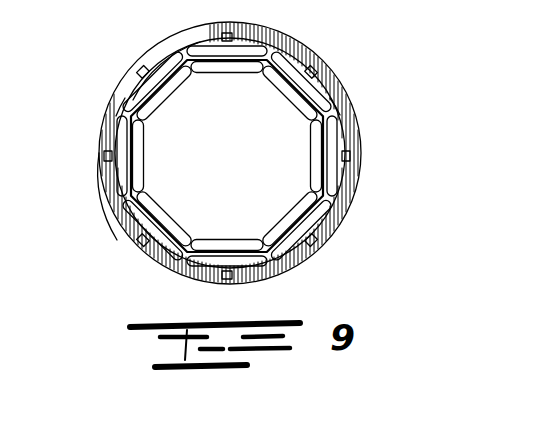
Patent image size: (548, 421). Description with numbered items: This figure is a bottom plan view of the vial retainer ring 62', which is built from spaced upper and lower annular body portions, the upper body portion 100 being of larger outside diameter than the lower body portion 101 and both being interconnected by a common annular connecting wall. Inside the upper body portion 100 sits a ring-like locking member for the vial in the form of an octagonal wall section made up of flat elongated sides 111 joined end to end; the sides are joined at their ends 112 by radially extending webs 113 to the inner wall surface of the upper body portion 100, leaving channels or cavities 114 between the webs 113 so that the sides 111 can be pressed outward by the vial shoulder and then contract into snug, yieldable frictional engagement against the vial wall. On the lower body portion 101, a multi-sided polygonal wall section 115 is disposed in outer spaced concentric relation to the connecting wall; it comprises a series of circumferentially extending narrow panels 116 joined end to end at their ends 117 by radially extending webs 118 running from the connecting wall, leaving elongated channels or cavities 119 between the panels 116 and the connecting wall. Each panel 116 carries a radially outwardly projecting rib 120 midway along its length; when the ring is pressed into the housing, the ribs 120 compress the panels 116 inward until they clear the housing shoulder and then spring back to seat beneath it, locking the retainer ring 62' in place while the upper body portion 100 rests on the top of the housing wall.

The vial retainer ring 62' is at (87, 196).
The upper annular body portion 100 is at (104, 165).
The lower annular body portion 101 is at (188, 44).
The flat elongated sides 111 is at (188, 72).
The ends of sides 112 is at (141, 122).
The radially extending webs 113 is at (313, 121).
The channels or cavities 114 is at (143, 155).
The multi-sided polygonal wall section 115 is at (116, 115).
The narrow panels 116 is at (284, 60).
The ends of side panels 117 is at (333, 107).
The radially extending webs 118 is at (180, 273).
The elongated channels or cavities 119 is at (198, 50).
The radially outwardly projecting rib 120 is at (312, 68).